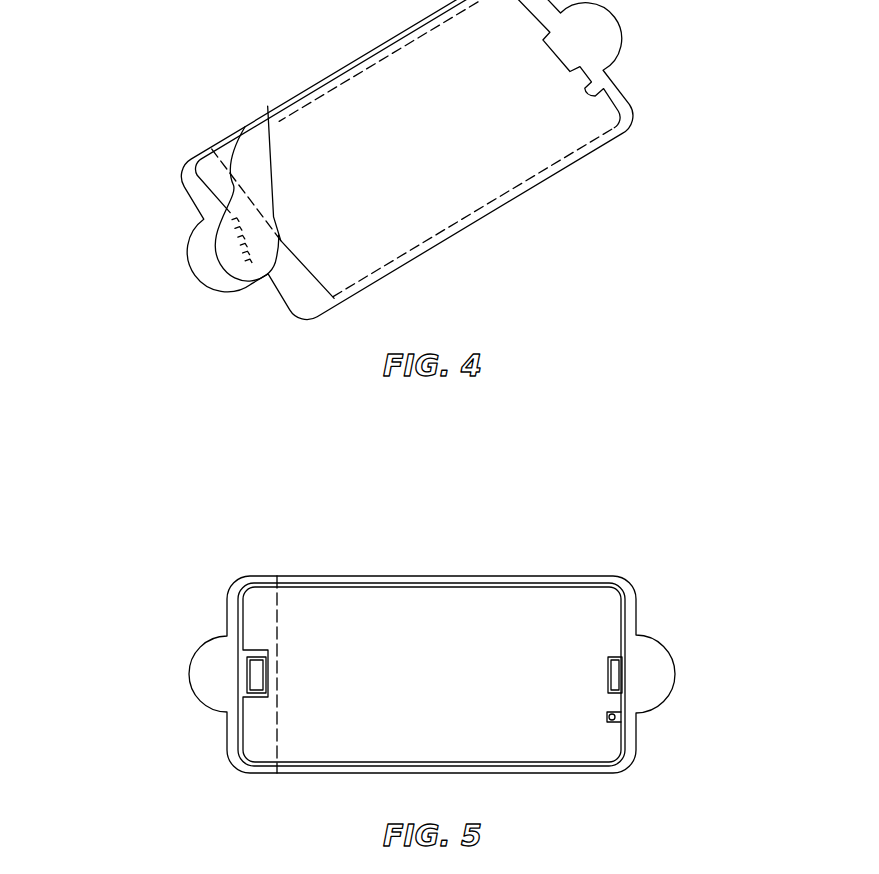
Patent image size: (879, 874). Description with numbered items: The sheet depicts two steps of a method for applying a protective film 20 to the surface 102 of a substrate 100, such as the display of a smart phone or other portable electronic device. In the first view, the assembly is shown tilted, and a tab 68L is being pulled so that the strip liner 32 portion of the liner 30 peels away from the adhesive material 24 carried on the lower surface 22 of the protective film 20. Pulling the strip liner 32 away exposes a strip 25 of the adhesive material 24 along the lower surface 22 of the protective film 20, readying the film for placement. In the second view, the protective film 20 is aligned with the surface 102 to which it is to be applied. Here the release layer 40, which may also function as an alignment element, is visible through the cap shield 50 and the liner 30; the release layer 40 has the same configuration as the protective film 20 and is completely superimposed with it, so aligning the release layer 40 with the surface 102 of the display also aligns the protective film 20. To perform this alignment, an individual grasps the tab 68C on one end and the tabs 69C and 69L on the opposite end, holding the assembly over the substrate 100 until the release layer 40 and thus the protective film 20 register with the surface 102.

In FIG. 4, the protective film 20 is at (205, 205).
In FIG. 5, the protective film 20 is at (388, 654).
In FIG. 4, the lower surface 22 is at (212, 178).
In FIG. 4, the adhesive material 24 is at (99, 148).
In FIG. 4, the strip 25 is at (237, 183).
In FIG. 4, the liner 30 is at (392, 241).
In FIG. 4, the strip liner 32 is at (250, 197).
In FIG. 5, the release layer 40 is at (400, 585).
In FIG. 5, the cap shield 50 is at (625, 763).
In FIG. 4, the tab 68L is at (247, 266).
In FIG. 5, the tab 68C is at (203, 668).
In FIG. 5, the tab 69C is at (660, 667).
In FIG. 5, the tab 69L is at (774, 650).
In FIG. 5, the substrate 100 is at (625, 615).
In FIG. 5, the surface 102 is at (605, 582).